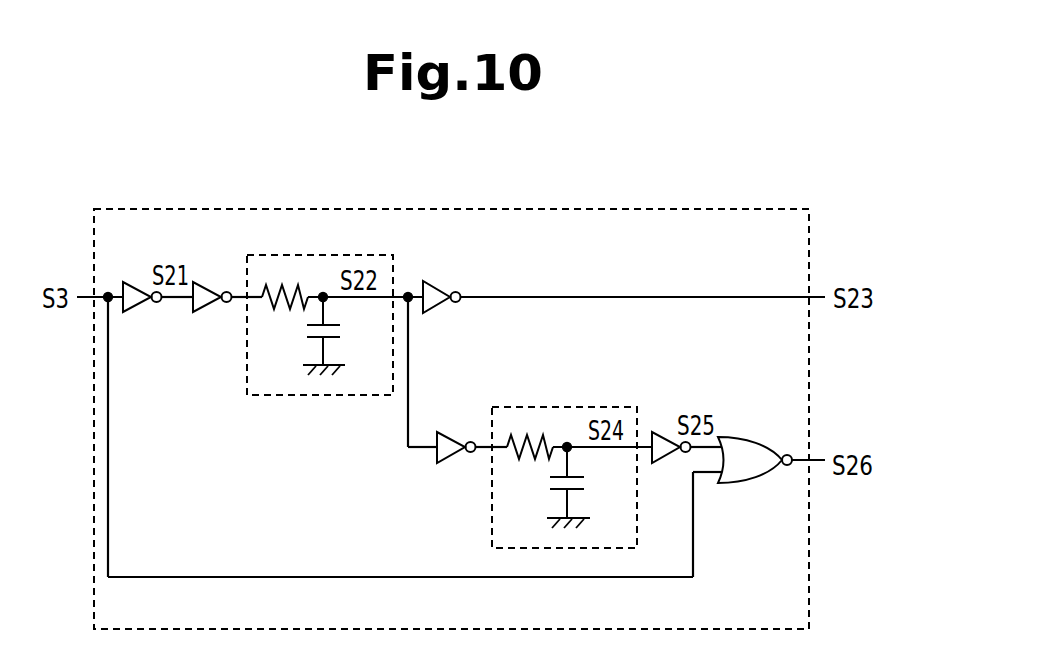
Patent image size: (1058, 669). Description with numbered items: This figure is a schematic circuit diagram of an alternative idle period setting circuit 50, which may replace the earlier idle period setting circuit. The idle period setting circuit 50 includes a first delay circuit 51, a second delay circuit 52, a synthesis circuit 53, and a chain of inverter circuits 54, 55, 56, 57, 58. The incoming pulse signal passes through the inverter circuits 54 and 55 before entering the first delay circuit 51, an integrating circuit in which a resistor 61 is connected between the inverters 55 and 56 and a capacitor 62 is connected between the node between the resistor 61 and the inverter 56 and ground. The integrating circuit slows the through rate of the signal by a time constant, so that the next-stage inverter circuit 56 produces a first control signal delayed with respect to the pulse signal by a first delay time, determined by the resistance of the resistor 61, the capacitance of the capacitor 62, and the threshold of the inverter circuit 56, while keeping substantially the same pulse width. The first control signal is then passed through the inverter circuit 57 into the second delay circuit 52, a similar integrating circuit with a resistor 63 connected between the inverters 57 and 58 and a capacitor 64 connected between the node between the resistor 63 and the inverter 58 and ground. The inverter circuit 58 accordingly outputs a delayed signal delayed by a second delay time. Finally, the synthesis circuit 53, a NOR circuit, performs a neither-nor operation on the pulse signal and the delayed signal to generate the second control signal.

The idle period setting circuit 50 is at (693, 209).
The first delay circuit 51 is at (298, 255).
The second delay circuit 52 is at (560, 407).
The synthesis circuit 53 is at (740, 437).
The inverter circuit 54 is at (138, 282).
The inverter circuit 55 is at (208, 283).
The inverter circuit 56 is at (438, 282).
The inverter circuit 57 is at (457, 437).
The inverter circuit 58 is at (667, 432).
The resistor 61 is at (288, 304).
The capacitor 62 is at (337, 337).
The resistor 63 is at (532, 454).
The capacitor 64 is at (582, 494).